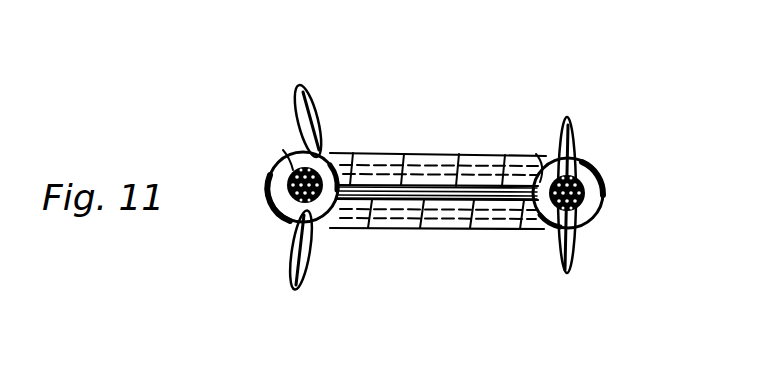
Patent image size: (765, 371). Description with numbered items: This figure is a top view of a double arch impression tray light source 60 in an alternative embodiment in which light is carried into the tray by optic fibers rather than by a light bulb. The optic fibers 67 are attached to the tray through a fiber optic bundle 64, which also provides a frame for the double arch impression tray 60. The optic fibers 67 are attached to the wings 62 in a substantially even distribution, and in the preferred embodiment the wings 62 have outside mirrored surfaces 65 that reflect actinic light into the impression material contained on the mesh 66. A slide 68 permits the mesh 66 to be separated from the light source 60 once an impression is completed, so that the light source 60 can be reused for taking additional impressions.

The double arch impression tray light source 60 is at (505, 245).
The wings 62 is at (315, 103).
The fiber optic bundle 64 is at (287, 213).
The outside mirrored surfaces 65 is at (577, 137).
The mesh 66 is at (465, 160).
The optic fibers 67 is at (296, 150).
The slide 68 is at (542, 157).